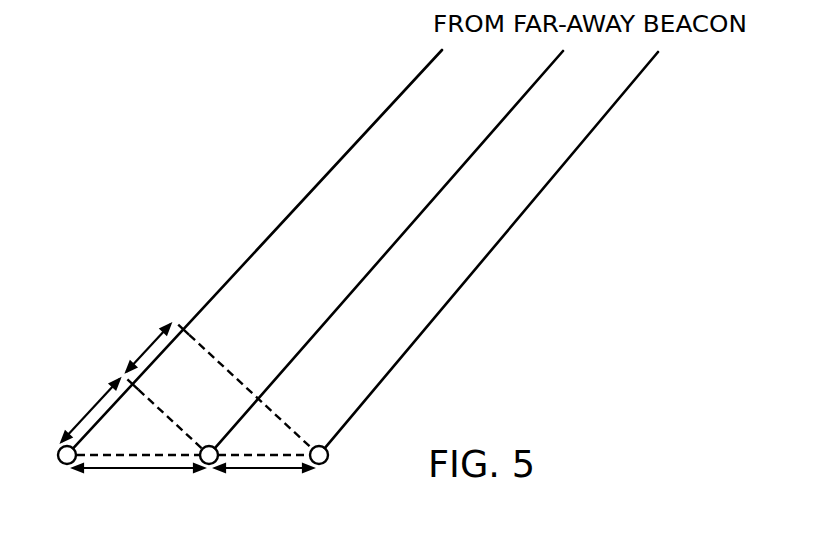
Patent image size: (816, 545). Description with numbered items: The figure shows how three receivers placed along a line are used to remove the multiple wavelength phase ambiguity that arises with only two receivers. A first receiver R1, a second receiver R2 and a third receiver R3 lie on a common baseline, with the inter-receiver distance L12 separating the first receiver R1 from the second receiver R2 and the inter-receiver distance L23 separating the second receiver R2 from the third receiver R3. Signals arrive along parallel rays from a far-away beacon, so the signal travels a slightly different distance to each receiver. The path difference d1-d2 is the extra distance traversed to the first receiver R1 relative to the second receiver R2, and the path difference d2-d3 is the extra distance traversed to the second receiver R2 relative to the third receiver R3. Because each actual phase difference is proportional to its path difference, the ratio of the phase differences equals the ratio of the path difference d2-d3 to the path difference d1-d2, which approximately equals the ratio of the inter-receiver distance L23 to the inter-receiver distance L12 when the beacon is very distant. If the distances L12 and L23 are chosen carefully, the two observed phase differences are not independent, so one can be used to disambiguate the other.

The first receiver R1 is at (62, 474).
The second receiver R2 is at (209, 474).
The third receiver R3 is at (319, 474).
The inter-receiver distance between receivers 1 and 2 L12 is at (138, 485).
The inter-receiver distance between receivers 2 and 3 L23 is at (264, 485).
The path difference between beacon and receivers 1 and 2 d1-d2 is at (72, 410).
The path difference between beacon and receivers 2 and 3 d2-d3 is at (125, 345).